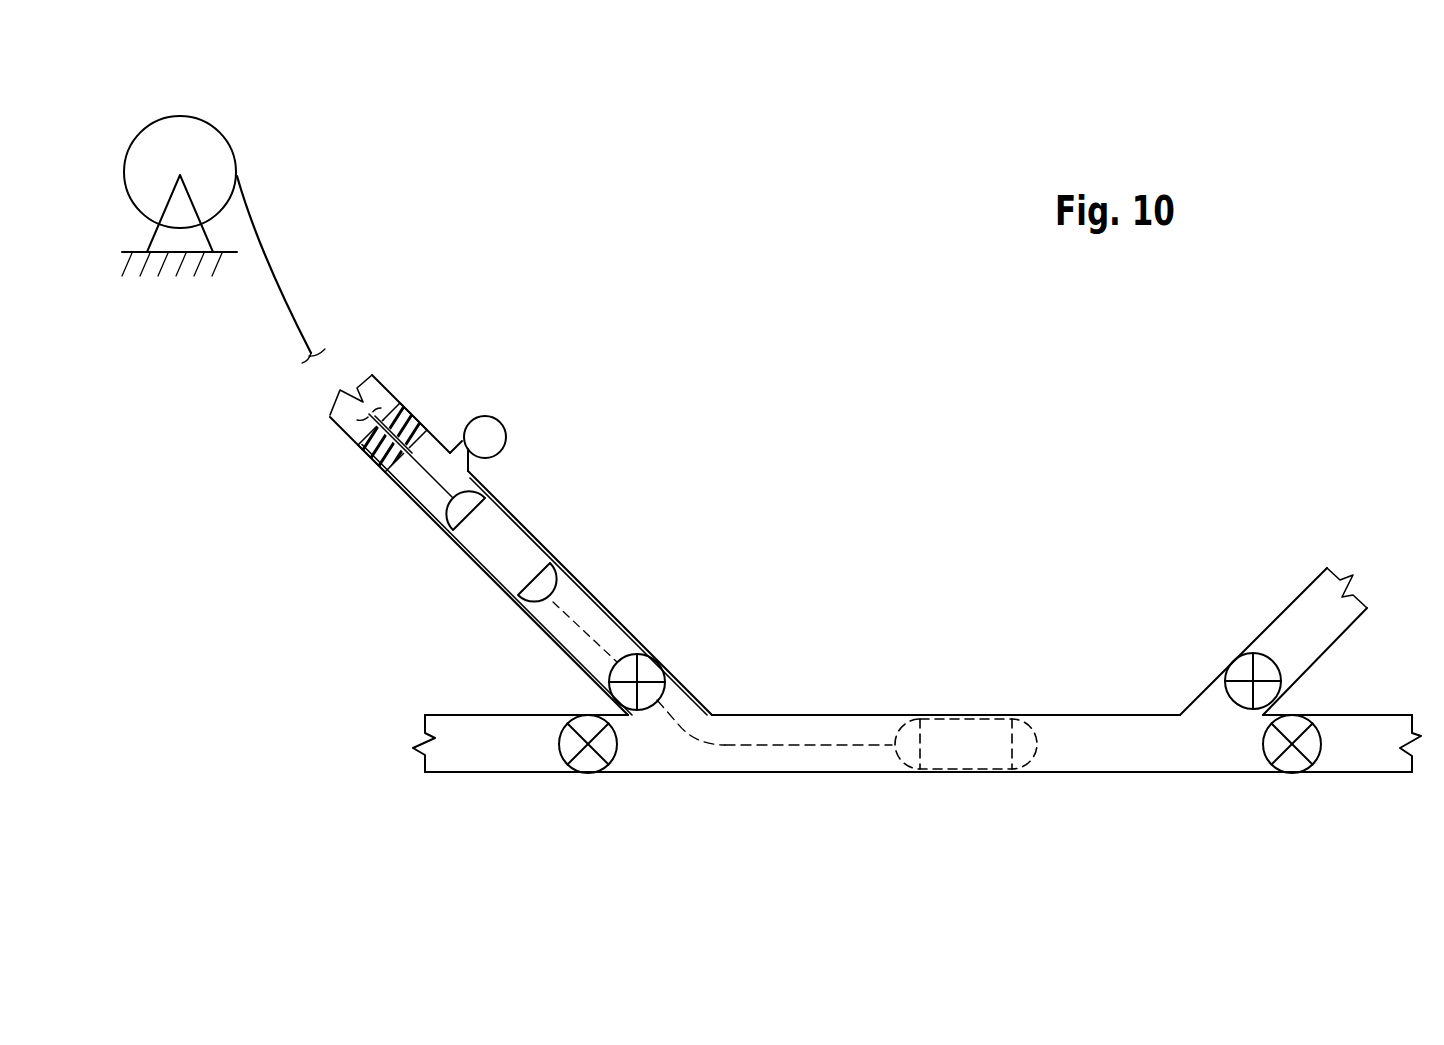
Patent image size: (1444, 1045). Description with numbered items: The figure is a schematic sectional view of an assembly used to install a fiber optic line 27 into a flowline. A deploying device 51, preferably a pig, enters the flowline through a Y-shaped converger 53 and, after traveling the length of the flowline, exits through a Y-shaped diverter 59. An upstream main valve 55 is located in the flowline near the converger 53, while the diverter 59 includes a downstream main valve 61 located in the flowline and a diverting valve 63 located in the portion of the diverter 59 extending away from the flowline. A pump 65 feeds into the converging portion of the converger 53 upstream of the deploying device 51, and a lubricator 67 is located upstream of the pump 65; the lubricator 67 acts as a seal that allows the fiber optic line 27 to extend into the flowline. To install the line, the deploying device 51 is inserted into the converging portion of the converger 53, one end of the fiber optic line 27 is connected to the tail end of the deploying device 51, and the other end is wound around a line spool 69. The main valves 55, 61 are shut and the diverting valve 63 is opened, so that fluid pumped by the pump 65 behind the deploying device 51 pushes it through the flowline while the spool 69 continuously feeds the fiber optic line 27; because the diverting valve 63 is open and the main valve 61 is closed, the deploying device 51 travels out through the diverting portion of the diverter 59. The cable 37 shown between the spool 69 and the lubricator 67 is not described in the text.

The line spool 69 is at (228, 143).
The cable 37 is at (267, 267).
The lubricator 67 is at (370, 437).
The pump 65 is at (507, 437).
The deploying device 51 is at (508, 537).
The Y-shaped converger 53 is at (657, 753).
The fiber optic line 27 is at (503, 752).
The upstream main valve 55 is at (588, 762).
The Y-shaped diverter 59 is at (1208, 740).
The diverting valve 63 is at (1240, 667).
The downstream main valve 61 is at (1293, 762).